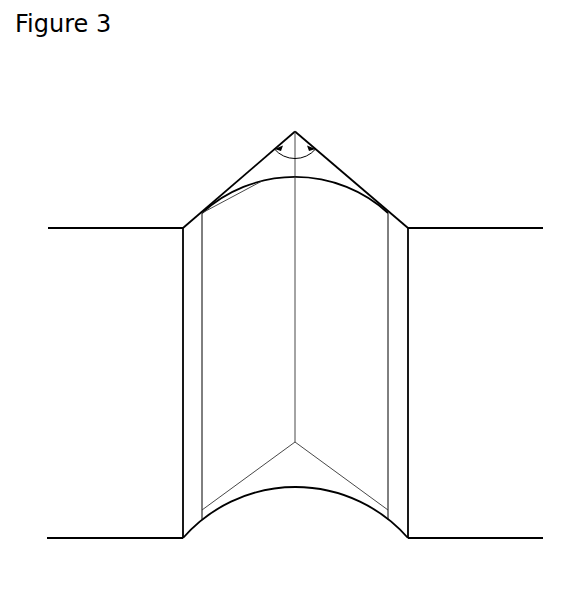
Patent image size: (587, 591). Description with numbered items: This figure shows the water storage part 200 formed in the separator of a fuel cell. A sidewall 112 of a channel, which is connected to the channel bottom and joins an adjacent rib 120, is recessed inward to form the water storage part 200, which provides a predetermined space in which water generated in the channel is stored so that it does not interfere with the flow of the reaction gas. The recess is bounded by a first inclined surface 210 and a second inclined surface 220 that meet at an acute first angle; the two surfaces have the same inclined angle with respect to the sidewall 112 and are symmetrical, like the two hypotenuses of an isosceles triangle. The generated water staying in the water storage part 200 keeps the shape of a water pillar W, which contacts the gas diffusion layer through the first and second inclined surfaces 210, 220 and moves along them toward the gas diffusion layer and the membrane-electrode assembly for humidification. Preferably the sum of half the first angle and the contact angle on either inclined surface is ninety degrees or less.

The rib 120 is at (148, 195).
The sidewall 112 is at (470, 512).
The water storage part 200 is at (295, 300).
The first inclined surface 210 is at (262, 160).
The second inclined surface 220 is at (351, 159).
The water pillar W is at (298, 473).